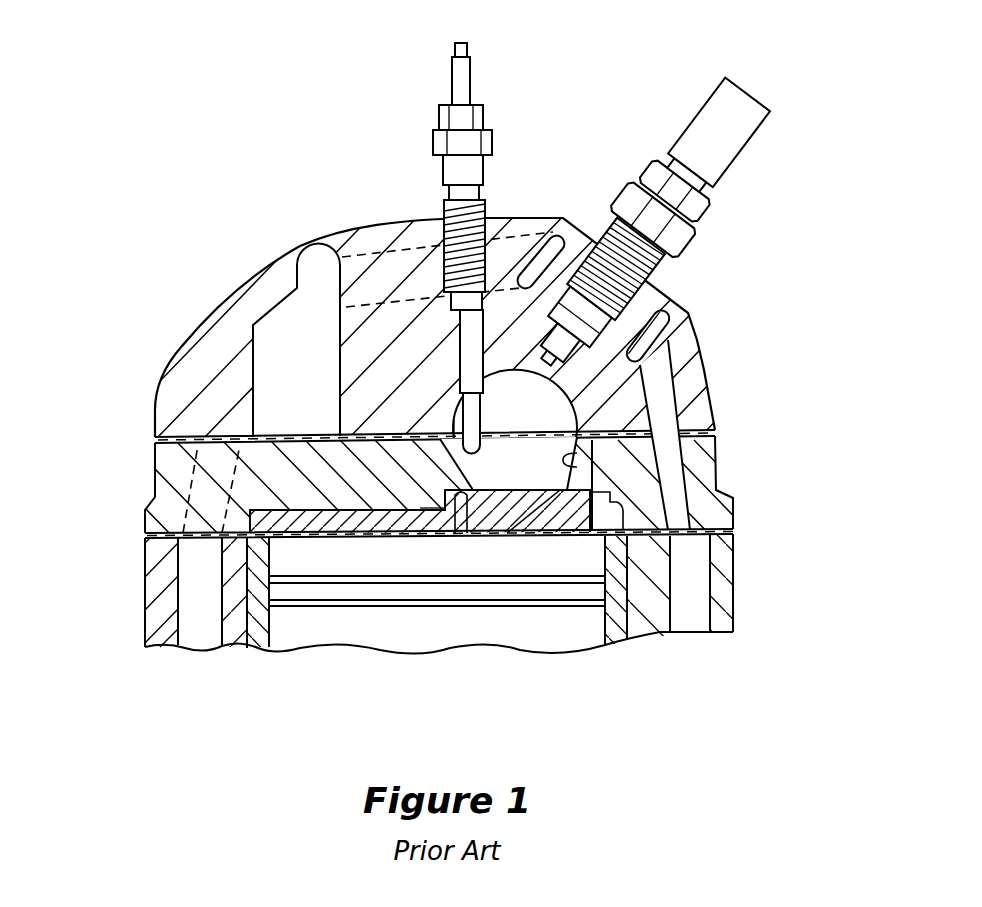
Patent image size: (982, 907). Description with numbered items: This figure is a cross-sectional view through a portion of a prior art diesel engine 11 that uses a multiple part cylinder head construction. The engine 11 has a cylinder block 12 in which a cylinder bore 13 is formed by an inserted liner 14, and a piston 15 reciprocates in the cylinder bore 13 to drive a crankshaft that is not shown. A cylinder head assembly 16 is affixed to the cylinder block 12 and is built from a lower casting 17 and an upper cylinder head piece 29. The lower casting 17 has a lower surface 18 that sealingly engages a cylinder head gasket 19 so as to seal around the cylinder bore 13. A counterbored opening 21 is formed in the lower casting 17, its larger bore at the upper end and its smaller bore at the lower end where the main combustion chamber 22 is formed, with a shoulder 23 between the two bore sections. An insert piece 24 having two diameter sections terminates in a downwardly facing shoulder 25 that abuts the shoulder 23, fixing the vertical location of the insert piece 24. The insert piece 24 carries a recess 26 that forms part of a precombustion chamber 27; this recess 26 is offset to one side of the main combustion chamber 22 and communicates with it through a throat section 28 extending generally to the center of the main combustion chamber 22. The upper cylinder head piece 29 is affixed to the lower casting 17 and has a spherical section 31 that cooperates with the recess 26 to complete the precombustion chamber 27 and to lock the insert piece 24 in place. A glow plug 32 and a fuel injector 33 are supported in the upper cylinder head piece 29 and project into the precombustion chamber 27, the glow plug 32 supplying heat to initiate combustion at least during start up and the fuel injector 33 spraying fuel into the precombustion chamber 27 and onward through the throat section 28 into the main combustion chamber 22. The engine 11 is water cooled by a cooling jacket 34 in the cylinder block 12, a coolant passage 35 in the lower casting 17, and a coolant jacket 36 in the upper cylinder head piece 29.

The diesel engine 11 is at (334, 206).
The cylinder block 12 is at (134, 622).
The cylinder bore 13 is at (272, 628).
The inserted liner 14 is at (617, 633).
The piston 15 is at (336, 644).
The cylinder head assembly 16 is at (104, 394).
The lower casting 17 is at (158, 490).
The lower surface 18 is at (150, 541).
The cylinder head gasket 19 is at (733, 531).
The counterbored opening 21 is at (452, 425).
The main combustion chamber 22 is at (312, 539).
The shoulder 23 is at (463, 539).
The insert piece 24 is at (582, 525).
The downwardly facing shoulder 25 is at (425, 509).
The recess 26 is at (577, 455).
The precombustion chamber 27 is at (529, 419).
The throat section 28 is at (558, 516).
The upper cylinder head piece 29 is at (197, 335).
The spherical section 31 is at (658, 350).
The glow plug 32 is at (487, 173).
The fuel injector 33 is at (703, 225).
The cooling jacket 34 is at (203, 642).
The coolant passage 35 is at (165, 463).
The coolant jacket 36 is at (287, 313).